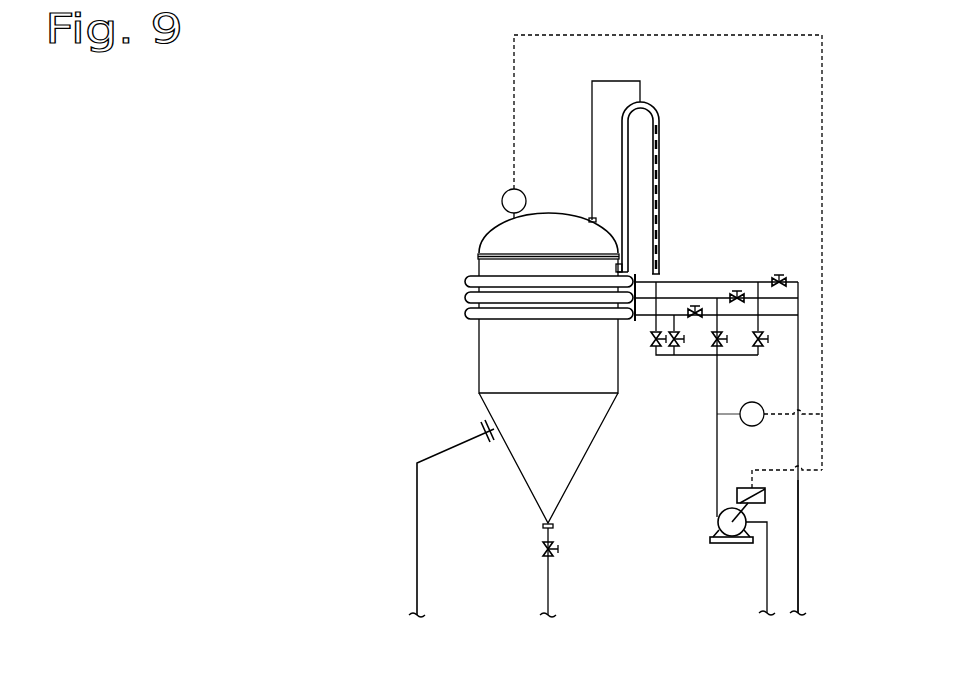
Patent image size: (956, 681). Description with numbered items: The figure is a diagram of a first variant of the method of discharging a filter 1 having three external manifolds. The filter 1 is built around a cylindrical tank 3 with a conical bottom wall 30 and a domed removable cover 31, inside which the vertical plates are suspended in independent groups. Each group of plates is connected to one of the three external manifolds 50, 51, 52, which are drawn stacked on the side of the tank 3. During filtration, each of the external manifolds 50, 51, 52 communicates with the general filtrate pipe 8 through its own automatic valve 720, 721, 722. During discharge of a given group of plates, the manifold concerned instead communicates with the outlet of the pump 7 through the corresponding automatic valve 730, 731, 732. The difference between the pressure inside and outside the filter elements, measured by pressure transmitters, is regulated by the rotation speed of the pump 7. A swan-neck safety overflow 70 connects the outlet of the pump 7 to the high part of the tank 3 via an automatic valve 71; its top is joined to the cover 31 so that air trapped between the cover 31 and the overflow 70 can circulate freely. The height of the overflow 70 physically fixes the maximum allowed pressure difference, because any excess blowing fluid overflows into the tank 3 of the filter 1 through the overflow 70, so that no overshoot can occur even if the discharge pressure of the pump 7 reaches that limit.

The filter 1 is at (415, 190).
The tank 3 is at (502, 368).
The cover 31 is at (495, 242).
The conical bottom wall 30 is at (532, 475).
The first external manifold 50 is at (462, 313).
The second external manifold 51 is at (462, 298).
The third external manifold 52 is at (462, 279).
The swan-neck safety overflow 70 is at (657, 164).
The automatic valve 71 is at (655, 350).
The automatic valve 720 is at (702, 310).
The automatic valve 721 is at (743, 296).
The automatic valve 722 is at (787, 280).
The automatic valve 730 is at (680, 347).
The automatic valve 731 is at (724, 350).
The automatic valve 732 is at (765, 347).
The pump 7 is at (723, 528).
The general filtrate pipe 8 is at (800, 562).